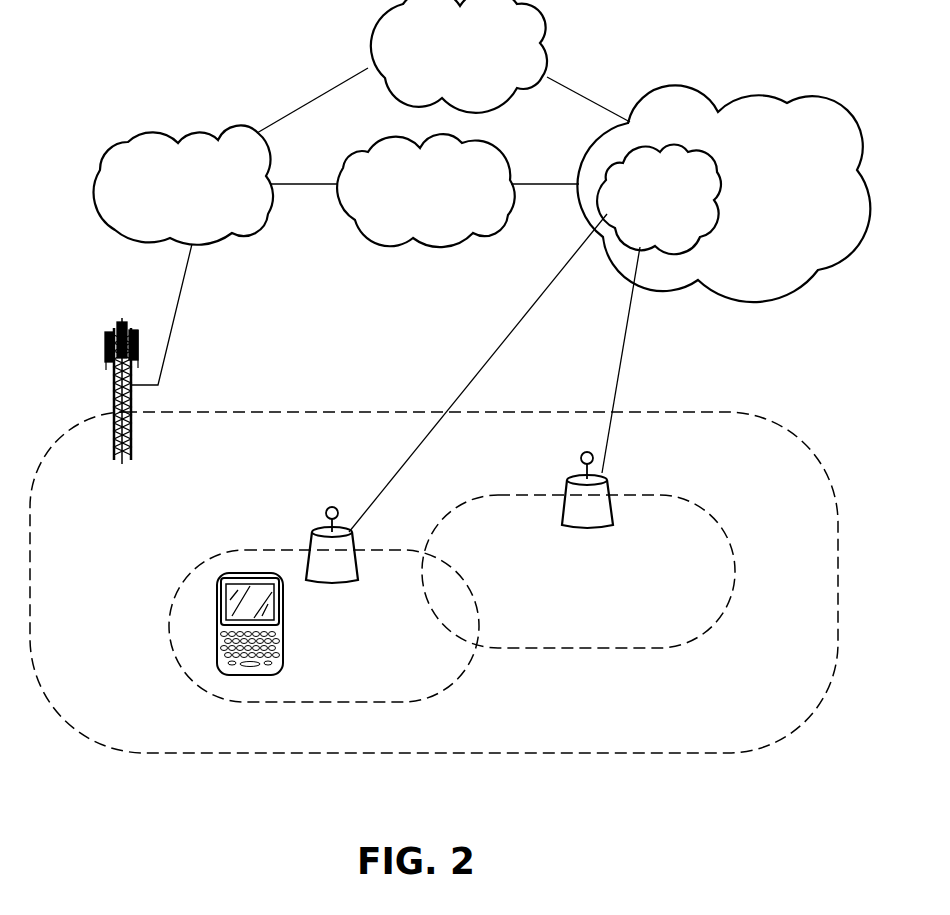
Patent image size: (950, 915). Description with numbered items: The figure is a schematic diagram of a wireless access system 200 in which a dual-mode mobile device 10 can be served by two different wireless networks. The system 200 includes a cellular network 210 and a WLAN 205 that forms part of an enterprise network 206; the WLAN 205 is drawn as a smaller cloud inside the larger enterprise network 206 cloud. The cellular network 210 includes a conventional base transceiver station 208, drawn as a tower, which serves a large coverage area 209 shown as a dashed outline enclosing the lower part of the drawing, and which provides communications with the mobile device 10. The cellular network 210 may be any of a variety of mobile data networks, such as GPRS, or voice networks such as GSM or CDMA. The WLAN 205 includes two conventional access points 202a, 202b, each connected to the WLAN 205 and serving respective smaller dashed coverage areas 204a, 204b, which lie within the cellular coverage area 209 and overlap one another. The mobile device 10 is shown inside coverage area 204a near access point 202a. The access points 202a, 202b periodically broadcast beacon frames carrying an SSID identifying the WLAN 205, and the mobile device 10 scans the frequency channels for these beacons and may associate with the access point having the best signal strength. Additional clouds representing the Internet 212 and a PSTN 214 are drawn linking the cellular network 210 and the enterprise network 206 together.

The wireless access system 200 is at (166, 64).
The mobile device 10 is at (288, 645).
The access point 202a is at (351, 578).
The access point 202b is at (598, 523).
The coverage area 204a is at (361, 703).
The coverage area 204b is at (617, 649).
The WLAN 205 is at (685, 220).
The enterprise network 206 is at (807, 207).
The base transceiver station 208 is at (113, 385).
The coverage area 209 is at (301, 412).
The cellular network 210 is at (205, 223).
The Internet 212 is at (478, 78).
The PSTN 214 is at (445, 214).